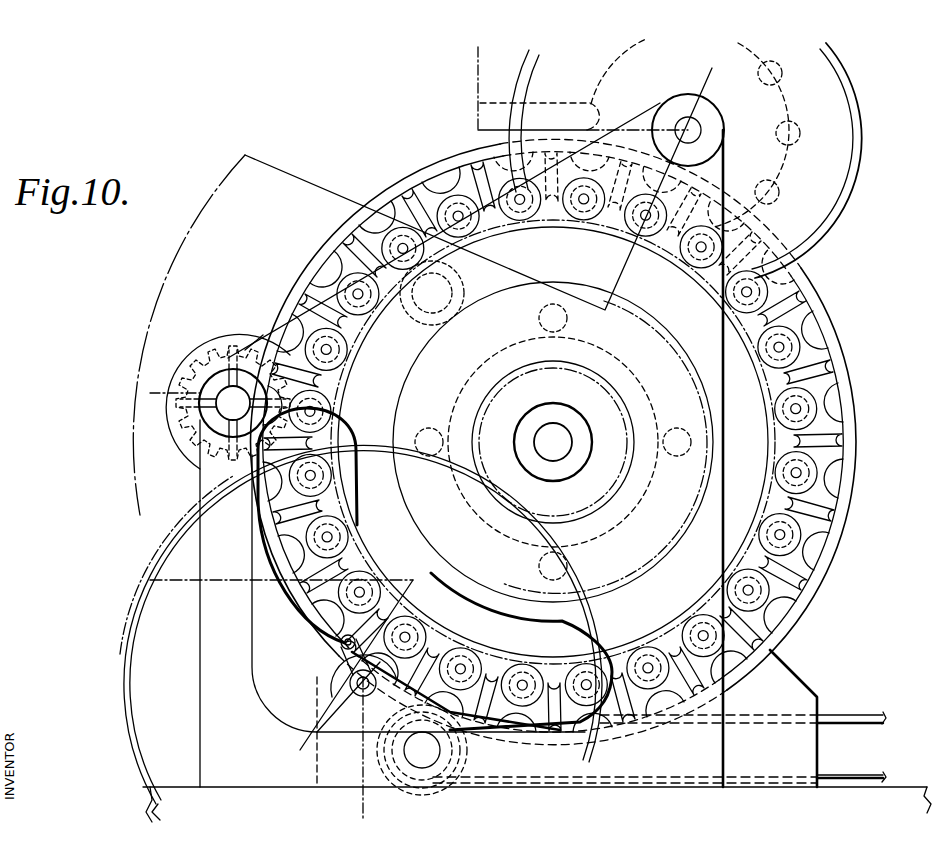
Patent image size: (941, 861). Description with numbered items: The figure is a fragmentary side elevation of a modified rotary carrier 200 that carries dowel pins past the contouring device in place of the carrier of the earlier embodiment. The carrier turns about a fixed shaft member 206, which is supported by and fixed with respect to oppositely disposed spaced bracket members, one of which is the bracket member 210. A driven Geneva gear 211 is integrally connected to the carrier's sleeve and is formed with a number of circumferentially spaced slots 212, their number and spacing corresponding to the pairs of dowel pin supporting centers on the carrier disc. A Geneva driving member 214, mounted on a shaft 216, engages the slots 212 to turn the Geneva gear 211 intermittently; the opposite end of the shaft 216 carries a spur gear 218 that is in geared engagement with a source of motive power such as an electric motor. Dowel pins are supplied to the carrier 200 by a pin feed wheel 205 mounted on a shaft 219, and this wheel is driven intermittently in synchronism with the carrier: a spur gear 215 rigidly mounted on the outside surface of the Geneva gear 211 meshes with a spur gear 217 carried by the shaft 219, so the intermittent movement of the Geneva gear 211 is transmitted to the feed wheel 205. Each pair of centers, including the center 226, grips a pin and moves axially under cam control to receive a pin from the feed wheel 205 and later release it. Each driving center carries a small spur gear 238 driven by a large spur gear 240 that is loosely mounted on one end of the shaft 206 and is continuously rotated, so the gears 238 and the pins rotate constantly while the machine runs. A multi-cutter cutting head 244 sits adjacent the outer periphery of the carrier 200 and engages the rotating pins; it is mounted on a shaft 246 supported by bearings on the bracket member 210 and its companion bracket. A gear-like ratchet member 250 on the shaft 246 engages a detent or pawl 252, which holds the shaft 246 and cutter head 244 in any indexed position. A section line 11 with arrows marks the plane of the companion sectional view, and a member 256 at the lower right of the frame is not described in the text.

The section line 11- 11 is at (497, 68).
The modified rotary carrier 200 is at (885, 333).
The pin feed wheel 205 is at (520, 108).
The shaft member 206 is at (553, 428).
The bracket member 210 is at (208, 602).
The driven Geneva gear 211 is at (810, 327).
The circumferentially spaced slots 212 is at (820, 371).
The Geneva driving member 214 is at (344, 689).
The spur gear 215 is at (396, 400).
The shaft 216 is at (381, 597).
The spur gear 217 is at (856, 137).
The spur gear 218 is at (130, 670).
The shaft 219 is at (695, 413).
The center 226 is at (814, 418).
The small spur gear 238 is at (816, 403).
The large spur gear 240 is at (852, 515).
The multi-cutter cutting head 244 is at (183, 346).
The shaft 246 is at (222, 392).
The gear-like ratchet member 250 is at (183, 443).
The detent or pawl 252 is at (260, 327).
The base bracket 256 is at (849, 718).